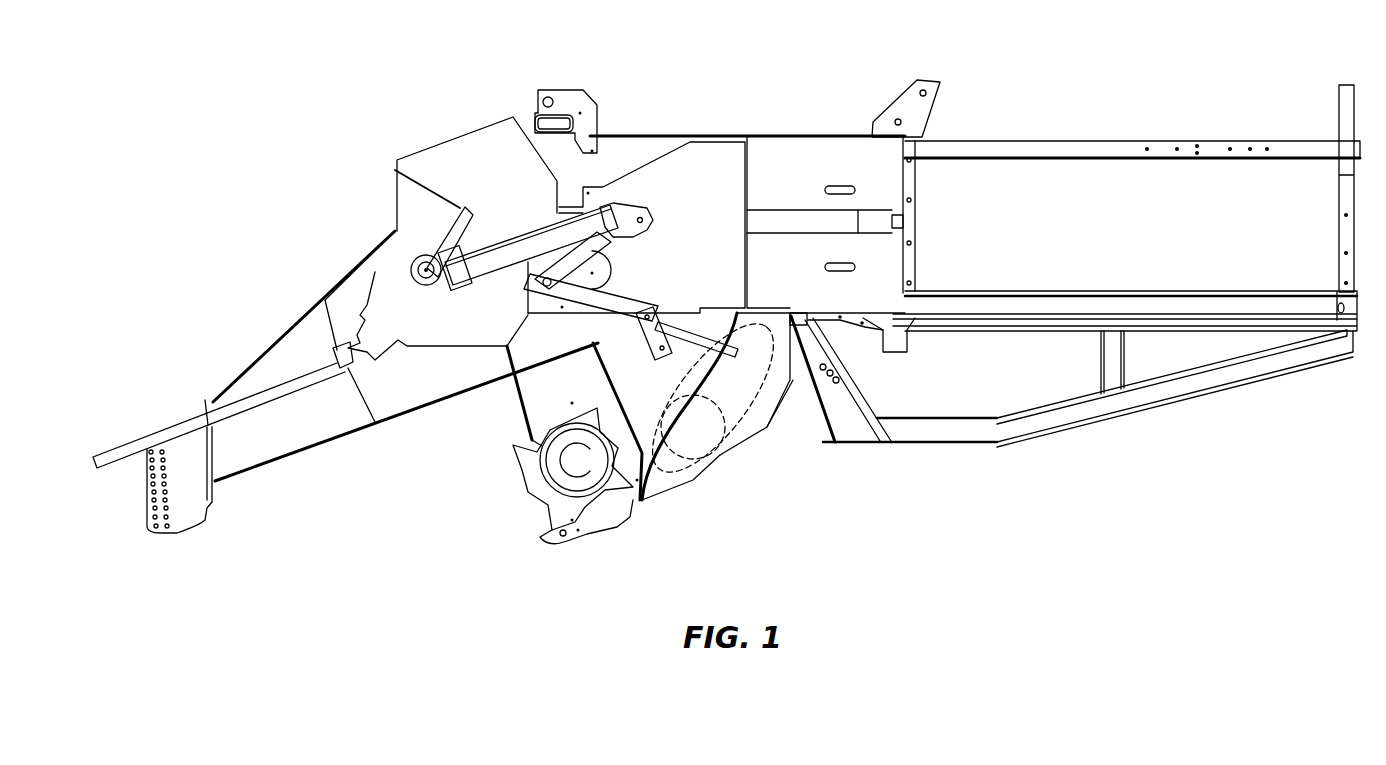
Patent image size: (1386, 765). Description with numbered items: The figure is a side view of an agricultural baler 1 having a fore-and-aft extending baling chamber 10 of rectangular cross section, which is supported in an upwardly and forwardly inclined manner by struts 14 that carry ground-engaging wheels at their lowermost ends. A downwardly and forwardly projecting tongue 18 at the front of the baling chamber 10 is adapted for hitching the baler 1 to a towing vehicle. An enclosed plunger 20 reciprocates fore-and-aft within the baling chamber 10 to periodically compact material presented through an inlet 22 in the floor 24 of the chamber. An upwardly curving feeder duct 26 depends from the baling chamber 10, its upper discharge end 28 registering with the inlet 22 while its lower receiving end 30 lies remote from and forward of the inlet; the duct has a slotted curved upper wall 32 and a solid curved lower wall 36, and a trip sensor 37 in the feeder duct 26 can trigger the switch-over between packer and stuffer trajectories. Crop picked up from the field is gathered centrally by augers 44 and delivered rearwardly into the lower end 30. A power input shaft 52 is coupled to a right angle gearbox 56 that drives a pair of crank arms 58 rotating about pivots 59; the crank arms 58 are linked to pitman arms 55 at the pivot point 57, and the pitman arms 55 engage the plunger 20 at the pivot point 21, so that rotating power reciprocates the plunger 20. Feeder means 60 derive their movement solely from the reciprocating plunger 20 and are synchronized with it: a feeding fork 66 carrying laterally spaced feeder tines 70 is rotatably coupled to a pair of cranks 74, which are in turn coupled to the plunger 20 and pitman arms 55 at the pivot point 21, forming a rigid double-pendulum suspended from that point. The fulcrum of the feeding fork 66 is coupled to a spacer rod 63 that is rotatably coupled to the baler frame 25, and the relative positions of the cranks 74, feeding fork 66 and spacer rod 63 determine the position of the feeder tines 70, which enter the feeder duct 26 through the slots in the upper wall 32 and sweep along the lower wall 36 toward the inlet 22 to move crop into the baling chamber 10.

The baler 1 is at (827, 56).
The baling chamber 10 is at (1078, 212).
The struts 14 is at (838, 417).
The tongue 18 is at (183, 492).
The plunger 20 is at (748, 157).
The pivot point 21 is at (638, 213).
The inlet 22 is at (767, 312).
The floor 24 is at (827, 320).
The baler frame 25 is at (1170, 387).
The feeder duct 26 is at (723, 453).
The upper discharge end 28 is at (845, 373).
The lower receiving end 30 is at (632, 502).
The curved upper wall 32 is at (708, 402).
The curved lower wall 36 is at (752, 437).
The trip sensor 37 is at (770, 417).
The augers 44 is at (545, 500).
The power input shaft 52 is at (337, 352).
The pitman arms 55 is at (523, 243).
The right angle gearbox 56 is at (453, 147).
The pivot point 57 is at (423, 262).
The crank arms 58 is at (453, 247).
The pivots 59 is at (395, 170).
The feeder means 60 is at (570, 306).
The spacer rod 63 is at (647, 338).
The feeding fork 66 is at (627, 307).
The feeder tines 70 is at (707, 340).
The cranks 74 is at (607, 247).